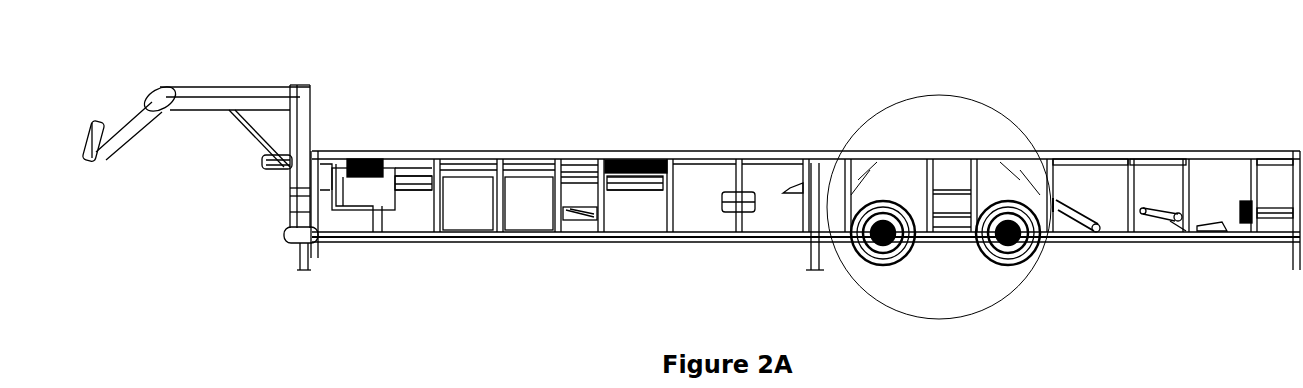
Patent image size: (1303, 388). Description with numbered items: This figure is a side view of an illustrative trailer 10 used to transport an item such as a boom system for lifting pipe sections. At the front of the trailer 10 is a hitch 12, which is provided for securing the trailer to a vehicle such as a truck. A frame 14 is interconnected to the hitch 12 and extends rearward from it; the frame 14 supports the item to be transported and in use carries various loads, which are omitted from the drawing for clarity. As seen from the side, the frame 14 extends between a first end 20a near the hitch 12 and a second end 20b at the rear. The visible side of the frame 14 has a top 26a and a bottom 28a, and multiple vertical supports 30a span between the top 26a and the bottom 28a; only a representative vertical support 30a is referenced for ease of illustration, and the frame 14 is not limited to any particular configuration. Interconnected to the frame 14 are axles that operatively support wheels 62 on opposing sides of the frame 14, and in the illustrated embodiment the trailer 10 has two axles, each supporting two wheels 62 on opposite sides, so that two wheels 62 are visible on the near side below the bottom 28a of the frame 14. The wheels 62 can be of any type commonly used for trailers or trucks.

The trailer 10 is at (323, 387).
The hitch 12 is at (250, 203).
The frame 14 is at (680, 132).
The first end 20a is at (380, 130).
The second end 20b is at (1295, 140).
The top 26a is at (773, 140).
The bottom 28a is at (1153, 252).
The vertical support 30a is at (603, 192).
The wheel 62 is at (903, 250).